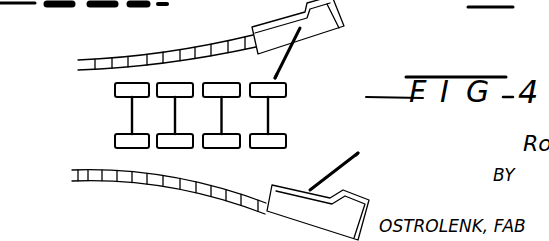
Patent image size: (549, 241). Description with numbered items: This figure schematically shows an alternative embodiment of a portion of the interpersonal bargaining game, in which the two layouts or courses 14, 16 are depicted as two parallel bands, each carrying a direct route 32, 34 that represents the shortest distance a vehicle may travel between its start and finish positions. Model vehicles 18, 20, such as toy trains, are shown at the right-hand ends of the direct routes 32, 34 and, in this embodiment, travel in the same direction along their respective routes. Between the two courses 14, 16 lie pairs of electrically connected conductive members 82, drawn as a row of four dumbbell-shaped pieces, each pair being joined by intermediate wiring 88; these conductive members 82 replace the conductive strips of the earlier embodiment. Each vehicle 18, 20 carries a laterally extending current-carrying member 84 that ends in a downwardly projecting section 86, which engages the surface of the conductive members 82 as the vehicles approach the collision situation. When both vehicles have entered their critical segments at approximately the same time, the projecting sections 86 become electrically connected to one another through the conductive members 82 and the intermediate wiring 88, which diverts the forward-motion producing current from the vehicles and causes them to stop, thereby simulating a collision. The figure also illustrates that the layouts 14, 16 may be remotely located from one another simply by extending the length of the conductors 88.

The course 14 is at (46, 67).
The course 16 is at (104, 220).
The model vehicle 18 is at (322, 33).
The model vehicle 20 is at (290, 214).
The direct route 32 is at (155, 53).
The direct route 34 is at (178, 189).
The conductive members 82 is at (115, 90).
The current-carrying member 84 is at (289, 53).
The downwardly projecting section 86 is at (277, 76).
The intermediate wiring 88 is at (268, 116).